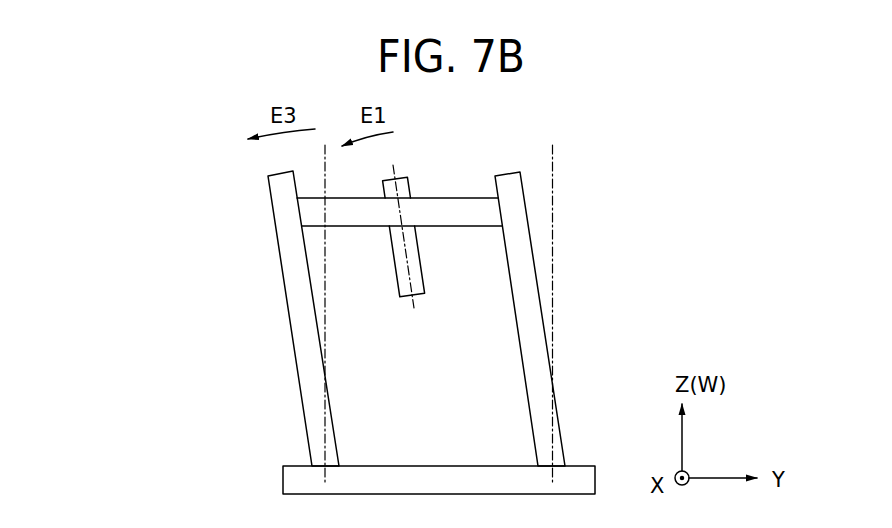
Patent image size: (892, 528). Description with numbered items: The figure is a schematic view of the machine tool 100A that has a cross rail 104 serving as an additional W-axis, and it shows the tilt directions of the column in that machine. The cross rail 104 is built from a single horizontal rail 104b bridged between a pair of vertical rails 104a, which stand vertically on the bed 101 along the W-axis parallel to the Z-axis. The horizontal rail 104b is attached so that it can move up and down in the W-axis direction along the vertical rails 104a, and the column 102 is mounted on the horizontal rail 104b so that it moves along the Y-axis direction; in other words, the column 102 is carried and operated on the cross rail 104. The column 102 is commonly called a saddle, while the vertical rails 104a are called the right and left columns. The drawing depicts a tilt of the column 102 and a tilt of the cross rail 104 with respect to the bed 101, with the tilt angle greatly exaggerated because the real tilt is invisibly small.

The machine tool 100A is at (603, 158).
The bed 101 is at (580, 462).
The column 102 is at (409, 190).
The cross rail 104 is at (286, 325).
The vertical rails 104a is at (290, 279).
The horizontal rail 104b is at (490, 211).